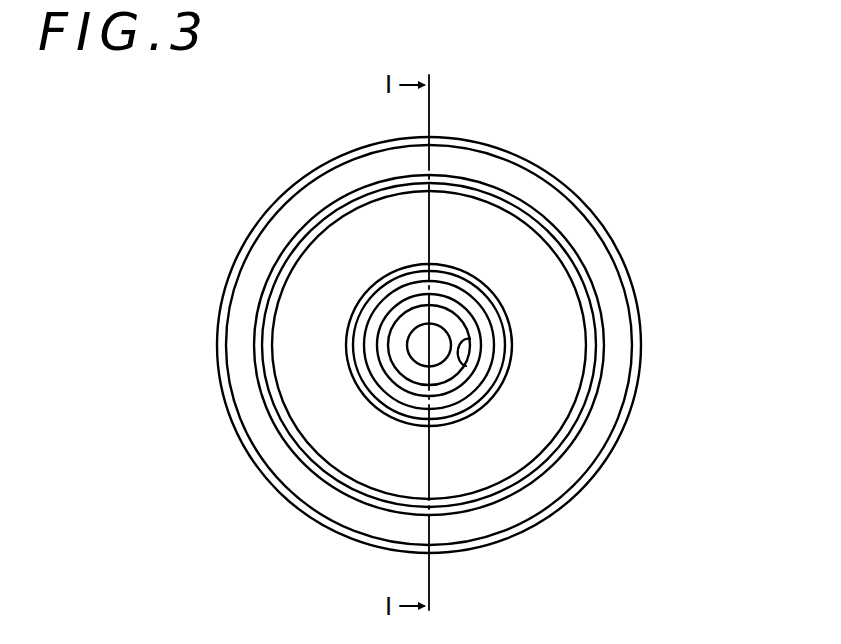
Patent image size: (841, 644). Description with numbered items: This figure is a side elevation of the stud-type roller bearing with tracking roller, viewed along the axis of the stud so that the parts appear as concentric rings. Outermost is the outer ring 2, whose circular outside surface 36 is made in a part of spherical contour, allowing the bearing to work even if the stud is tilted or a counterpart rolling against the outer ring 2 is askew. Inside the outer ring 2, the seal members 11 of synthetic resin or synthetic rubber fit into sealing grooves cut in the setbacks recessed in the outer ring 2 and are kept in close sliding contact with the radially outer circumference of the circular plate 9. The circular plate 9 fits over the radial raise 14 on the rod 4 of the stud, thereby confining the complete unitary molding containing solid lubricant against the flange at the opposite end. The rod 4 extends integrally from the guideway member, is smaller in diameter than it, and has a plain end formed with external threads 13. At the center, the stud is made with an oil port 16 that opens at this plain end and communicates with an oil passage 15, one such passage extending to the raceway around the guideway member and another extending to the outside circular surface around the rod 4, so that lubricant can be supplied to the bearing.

The outer ring 2 is at (563, 217).
The rod 4 is at (541, 345).
The circular plate 9 is at (333, 250).
The seal members 11 is at (482, 345).
The external threads 13 is at (319, 345).
The radial raise 14 is at (500, 303).
The oil passage 15 is at (439, 355).
The oil port 16 is at (537, 379).
The circular outside surface 36 is at (518, 163).